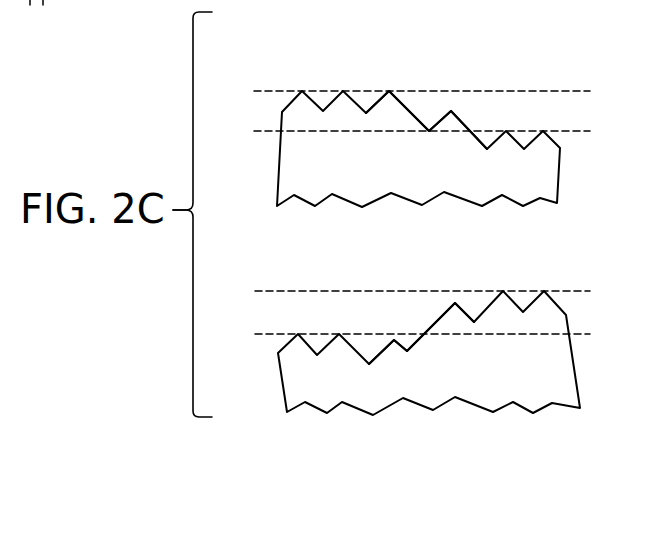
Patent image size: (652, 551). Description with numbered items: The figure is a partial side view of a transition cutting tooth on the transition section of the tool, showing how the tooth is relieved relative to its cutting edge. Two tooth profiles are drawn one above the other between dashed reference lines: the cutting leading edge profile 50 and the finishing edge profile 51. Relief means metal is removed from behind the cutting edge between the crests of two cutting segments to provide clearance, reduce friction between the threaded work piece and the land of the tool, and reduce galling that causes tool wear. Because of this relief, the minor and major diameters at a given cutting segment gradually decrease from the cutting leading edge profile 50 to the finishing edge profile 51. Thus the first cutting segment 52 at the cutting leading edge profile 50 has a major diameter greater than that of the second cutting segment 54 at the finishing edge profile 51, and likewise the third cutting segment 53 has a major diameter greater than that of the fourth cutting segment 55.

The cutting leading edge profile 50 is at (413, 60).
The finishing edge profile 51 is at (396, 290).
The first cutting segment 52 is at (453, 120).
The third cutting segment 53 is at (389, 91).
The second cutting segment 54 is at (388, 355).
The fourth cutting segment 55 is at (459, 317).